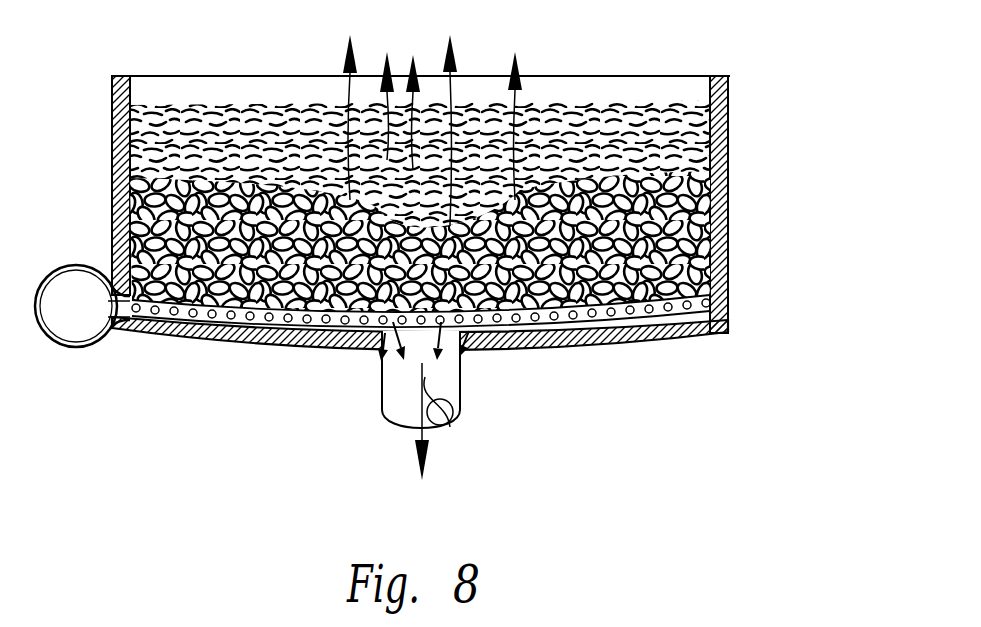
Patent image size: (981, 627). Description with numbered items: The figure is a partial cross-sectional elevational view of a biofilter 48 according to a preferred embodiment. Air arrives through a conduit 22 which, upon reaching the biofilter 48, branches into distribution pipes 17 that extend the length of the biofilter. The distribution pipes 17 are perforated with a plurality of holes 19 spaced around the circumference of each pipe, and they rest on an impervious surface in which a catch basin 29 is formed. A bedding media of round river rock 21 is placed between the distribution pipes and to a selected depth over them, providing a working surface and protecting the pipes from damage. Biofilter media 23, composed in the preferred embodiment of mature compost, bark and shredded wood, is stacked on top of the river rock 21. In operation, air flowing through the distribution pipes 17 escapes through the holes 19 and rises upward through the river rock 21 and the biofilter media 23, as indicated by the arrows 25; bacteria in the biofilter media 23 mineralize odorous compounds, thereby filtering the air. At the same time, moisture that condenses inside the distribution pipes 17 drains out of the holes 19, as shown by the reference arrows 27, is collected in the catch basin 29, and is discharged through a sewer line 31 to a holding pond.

The distribution pipes 17 is at (628, 343).
The holes 19 is at (550, 318).
The round river rock 21 is at (135, 210).
The conduit 22 is at (68, 378).
The biofilter media 23 is at (712, 124).
The arrows 25 is at (350, 103).
The reference arrows 27 is at (478, 352).
The catch basin 29 is at (440, 367).
The sewer line 31 is at (380, 382).
The biofilter 48 is at (790, 252).